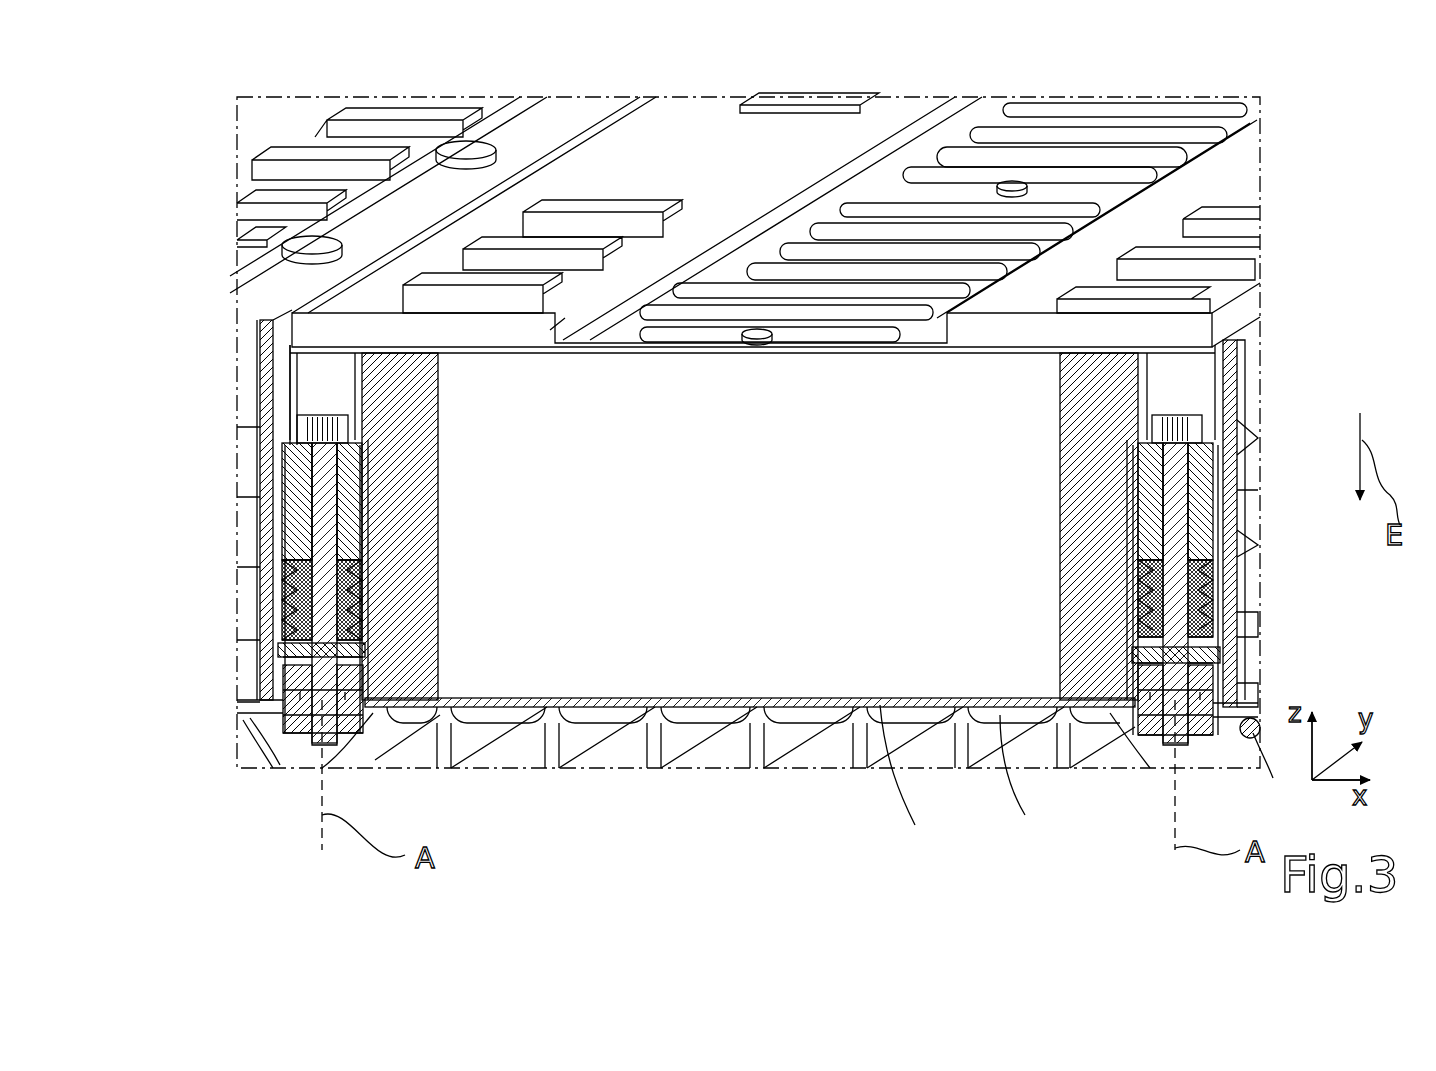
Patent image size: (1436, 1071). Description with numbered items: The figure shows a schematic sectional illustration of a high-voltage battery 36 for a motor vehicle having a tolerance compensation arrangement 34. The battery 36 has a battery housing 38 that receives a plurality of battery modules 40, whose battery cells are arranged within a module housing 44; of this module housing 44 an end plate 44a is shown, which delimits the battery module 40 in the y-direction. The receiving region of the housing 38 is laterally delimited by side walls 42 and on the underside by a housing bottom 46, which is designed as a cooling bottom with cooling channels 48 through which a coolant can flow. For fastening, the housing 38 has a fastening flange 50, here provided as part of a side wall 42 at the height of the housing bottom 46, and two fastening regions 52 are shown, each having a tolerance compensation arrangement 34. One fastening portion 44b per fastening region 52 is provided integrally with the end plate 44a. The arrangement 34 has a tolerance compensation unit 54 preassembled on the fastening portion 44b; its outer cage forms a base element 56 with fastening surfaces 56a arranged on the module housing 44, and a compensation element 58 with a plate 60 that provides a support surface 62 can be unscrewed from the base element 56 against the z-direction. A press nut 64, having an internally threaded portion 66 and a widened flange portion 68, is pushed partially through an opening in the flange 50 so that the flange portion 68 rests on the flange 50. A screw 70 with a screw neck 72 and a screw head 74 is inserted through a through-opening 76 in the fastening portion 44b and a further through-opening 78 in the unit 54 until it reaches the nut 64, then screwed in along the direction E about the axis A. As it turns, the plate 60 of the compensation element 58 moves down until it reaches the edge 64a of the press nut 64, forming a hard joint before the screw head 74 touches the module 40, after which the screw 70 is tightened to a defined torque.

The tolerance compensation arrangement 34 is at (288, 432).
The high-voltage battery 36 is at (1152, 68).
The battery housing 38 is at (1238, 352).
The battery module 40 is at (352, 127).
The side wall 42 is at (250, 345).
The module housing 44 is at (747, 570).
The end plate 44a is at (1105, 365).
The fastening portion 44b is at (438, 462).
The housing bottom 46 is at (1024, 783).
The cooling channels 48 is at (908, 783).
The fastening flange 50 is at (248, 703).
The fastening region 52 is at (747, 493).
The tolerance compensation unit 54 is at (285, 556).
The base element 56 is at (290, 620).
The fastening surfaces 56a is at (260, 563).
The compensation element 58 is at (365, 650).
The plate 60 is at (340, 665).
The support surface 62 is at (290, 655).
The press nut 64 is at (262, 681).
The edge 64a is at (350, 700).
The threaded portion 66 is at (350, 712).
The flange portion 68 is at (262, 736).
The screw 70 is at (300, 540).
The screw neck 72 is at (340, 478).
The screw head 74 is at (347, 428).
The through-opening 76 is at (362, 505).
The further through-opening 78 is at (335, 570).